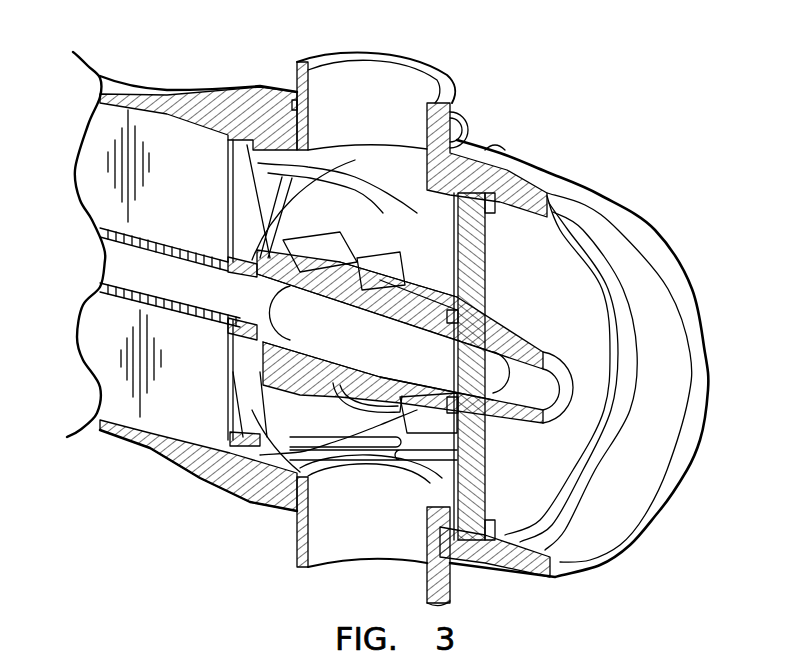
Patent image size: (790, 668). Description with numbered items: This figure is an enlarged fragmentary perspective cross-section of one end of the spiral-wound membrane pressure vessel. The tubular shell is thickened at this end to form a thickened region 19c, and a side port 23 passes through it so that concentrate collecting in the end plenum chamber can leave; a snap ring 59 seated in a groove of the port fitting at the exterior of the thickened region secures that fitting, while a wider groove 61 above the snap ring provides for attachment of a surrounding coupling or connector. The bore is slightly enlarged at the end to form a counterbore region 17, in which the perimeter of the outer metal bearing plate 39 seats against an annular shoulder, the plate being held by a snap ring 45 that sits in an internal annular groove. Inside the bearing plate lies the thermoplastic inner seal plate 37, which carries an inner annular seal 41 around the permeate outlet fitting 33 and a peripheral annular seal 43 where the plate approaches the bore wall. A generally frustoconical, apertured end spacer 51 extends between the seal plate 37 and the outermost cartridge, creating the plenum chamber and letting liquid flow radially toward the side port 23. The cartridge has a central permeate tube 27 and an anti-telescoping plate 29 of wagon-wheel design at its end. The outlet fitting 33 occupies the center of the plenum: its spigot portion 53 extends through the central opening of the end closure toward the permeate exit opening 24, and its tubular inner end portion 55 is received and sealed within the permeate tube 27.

The counterbore region 17 is at (605, 545).
The thickened region 19c is at (262, 90).
The side port 23 is at (353, 97).
The permeate exit opening 24 is at (483, 440).
The central permeate tube 27 is at (112, 297).
The anti-telescoping plate 29 is at (318, 250).
The permeate outlet fitting 33 is at (265, 392).
The inner seal plate 37 is at (483, 540).
The outer bearing plate 39 is at (567, 283).
The inner annular seal 41 is at (487, 322).
The peripheral annular seal 43 is at (467, 227).
The snap ring 45 is at (597, 458).
The end spacer 51 is at (242, 217).
The spigot portion 53 is at (573, 393).
The inner end portion 55 is at (210, 293).
The snap ring 59 is at (293, 100).
The wider groove 61 is at (453, 122).